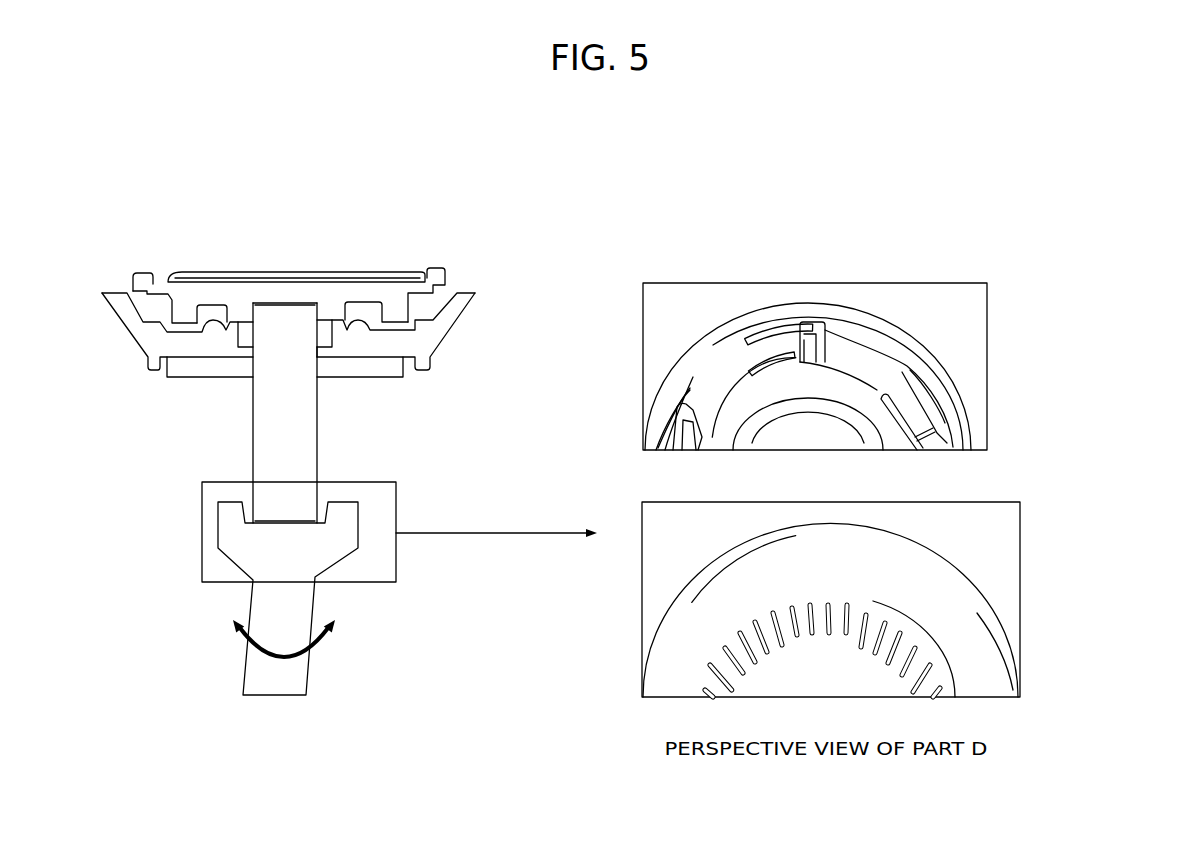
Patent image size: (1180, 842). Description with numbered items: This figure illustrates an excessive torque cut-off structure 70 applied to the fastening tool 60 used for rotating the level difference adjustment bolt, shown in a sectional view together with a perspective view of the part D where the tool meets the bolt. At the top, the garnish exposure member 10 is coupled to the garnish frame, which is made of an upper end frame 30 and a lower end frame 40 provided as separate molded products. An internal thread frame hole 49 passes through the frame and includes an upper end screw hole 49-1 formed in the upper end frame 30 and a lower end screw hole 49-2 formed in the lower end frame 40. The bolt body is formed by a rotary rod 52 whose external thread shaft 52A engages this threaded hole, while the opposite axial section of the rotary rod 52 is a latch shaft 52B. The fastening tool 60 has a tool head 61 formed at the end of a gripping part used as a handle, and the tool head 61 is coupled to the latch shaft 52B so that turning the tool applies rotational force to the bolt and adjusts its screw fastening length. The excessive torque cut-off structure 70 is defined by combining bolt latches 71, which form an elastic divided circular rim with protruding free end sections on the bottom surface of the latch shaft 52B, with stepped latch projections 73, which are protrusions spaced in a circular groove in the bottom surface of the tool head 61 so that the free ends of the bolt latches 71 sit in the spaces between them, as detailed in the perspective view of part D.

The garnish exposure member 10 is at (282, 272).
The upper end frame 30 is at (238, 303).
The lower end frame 40 is at (417, 347).
The internal thread frame hole 49 is at (360, 175).
The upper end screw hole 49-1 is at (320, 352).
The lower end screw hole 49-2 is at (322, 308).
The rotary rod 52 is at (265, 439).
The external thread shaft 52A is at (287, 317).
The latch shaft 52B is at (283, 510).
The fastening tool 60 is at (272, 683).
The tool head 61 is at (353, 533).
The excessive torque cut-off structure 70 is at (1118, 445).
The bolt latch 71 is at (825, 333).
The stepped latch projections 73 is at (848, 605).
The part D is at (200, 533).